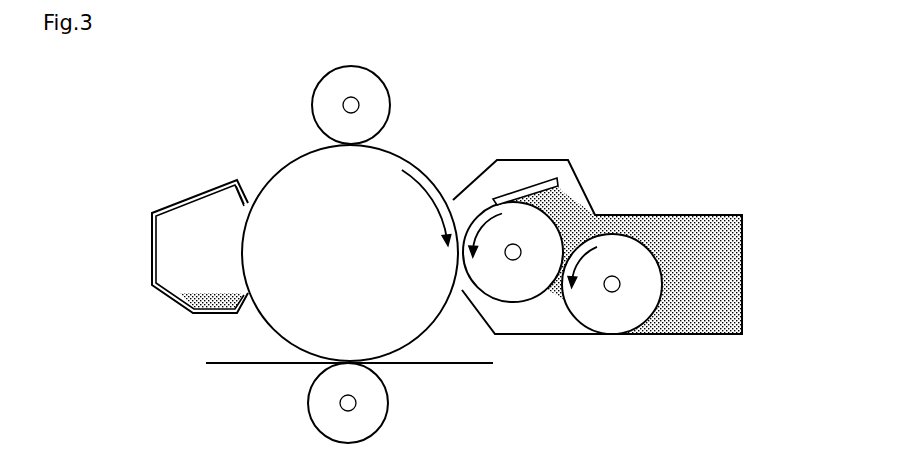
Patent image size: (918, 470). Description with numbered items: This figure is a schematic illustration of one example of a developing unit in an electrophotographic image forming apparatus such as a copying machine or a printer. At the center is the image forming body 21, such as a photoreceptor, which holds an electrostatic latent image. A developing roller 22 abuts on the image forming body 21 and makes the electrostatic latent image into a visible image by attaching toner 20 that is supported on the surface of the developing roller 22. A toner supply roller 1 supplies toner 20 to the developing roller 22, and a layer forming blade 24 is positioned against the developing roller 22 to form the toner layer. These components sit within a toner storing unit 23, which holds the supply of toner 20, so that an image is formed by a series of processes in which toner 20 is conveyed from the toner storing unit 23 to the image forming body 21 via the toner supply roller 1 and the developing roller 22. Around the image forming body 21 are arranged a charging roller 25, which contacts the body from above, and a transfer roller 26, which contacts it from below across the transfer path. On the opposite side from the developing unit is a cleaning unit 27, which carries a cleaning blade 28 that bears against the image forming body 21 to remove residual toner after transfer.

The toner supply roller 1 is at (622, 308).
The toner 20 is at (670, 235).
The image forming body 21 is at (298, 178).
The developing roller 22 is at (520, 280).
The toner storing unit 23 is at (702, 215).
The layer forming blade 24 is at (525, 190).
The charging roller 25 is at (376, 99).
The transfer roller 26 is at (368, 405).
The cleaning unit 27 is at (190, 194).
The cleaning blade 28 is at (238, 201).